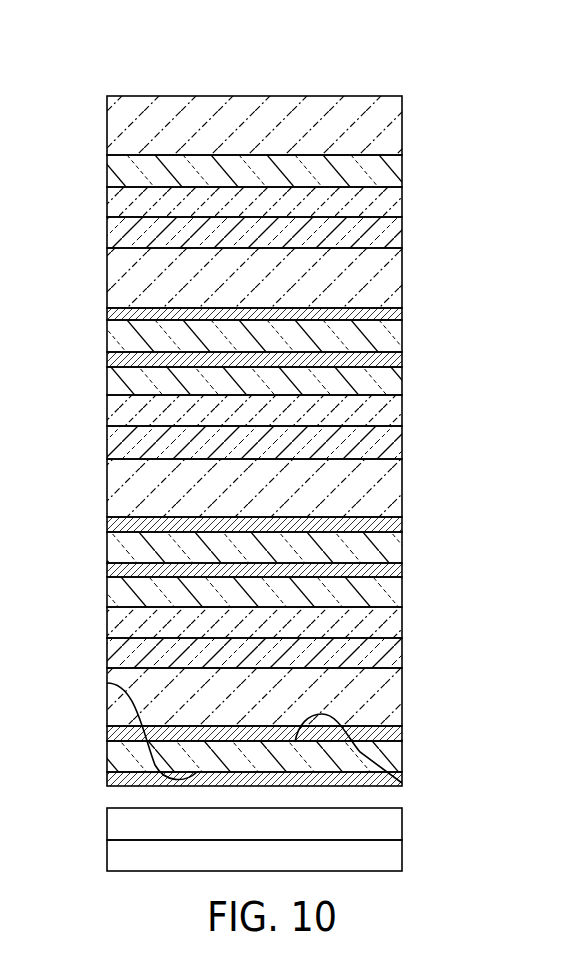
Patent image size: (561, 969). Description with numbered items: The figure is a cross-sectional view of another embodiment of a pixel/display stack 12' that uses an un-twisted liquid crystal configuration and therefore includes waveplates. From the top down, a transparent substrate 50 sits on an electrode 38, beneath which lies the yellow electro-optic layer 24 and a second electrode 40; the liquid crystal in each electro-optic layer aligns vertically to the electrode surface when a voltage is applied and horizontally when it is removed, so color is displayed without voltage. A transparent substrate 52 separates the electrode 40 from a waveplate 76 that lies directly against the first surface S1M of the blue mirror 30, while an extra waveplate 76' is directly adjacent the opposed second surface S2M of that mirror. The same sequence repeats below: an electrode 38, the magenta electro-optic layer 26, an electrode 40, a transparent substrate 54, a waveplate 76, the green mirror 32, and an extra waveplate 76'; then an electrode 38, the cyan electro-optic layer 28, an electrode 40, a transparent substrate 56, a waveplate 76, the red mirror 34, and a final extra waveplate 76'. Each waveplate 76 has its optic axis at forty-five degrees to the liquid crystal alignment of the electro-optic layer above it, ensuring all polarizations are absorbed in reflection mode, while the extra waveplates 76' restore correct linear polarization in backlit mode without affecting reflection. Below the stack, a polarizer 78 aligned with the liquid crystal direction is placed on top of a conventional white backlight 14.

The display stack 12' is at (453, 37).
The transparent substrate 50 is at (388, 134).
The electrode 38 is at (388, 177).
The yellow electro-optic layer 24 is at (388, 207).
The electrode 40 is at (388, 240).
The transparent substrate 52 is at (388, 282).
The waveplate 76 is at (214, 533).
The blue mirror 30 is at (388, 344).
The extra waveplate 76' is at (213, 575).
The magenta electro-optic layer 26 is at (388, 417).
The transparent substrate 54 is at (388, 497).
The green mirror 32 is at (388, 550).
The cyan electro-optic layer 28 is at (388, 624).
The transparent substrate 56 is at (388, 702).
The red mirror 34 is at (388, 752).
The second surface of mirror S2M is at (107, 683).
The first surface of mirror S1M is at (404, 781).
The polarizer 78 is at (388, 829).
The backlight 14 is at (388, 862).